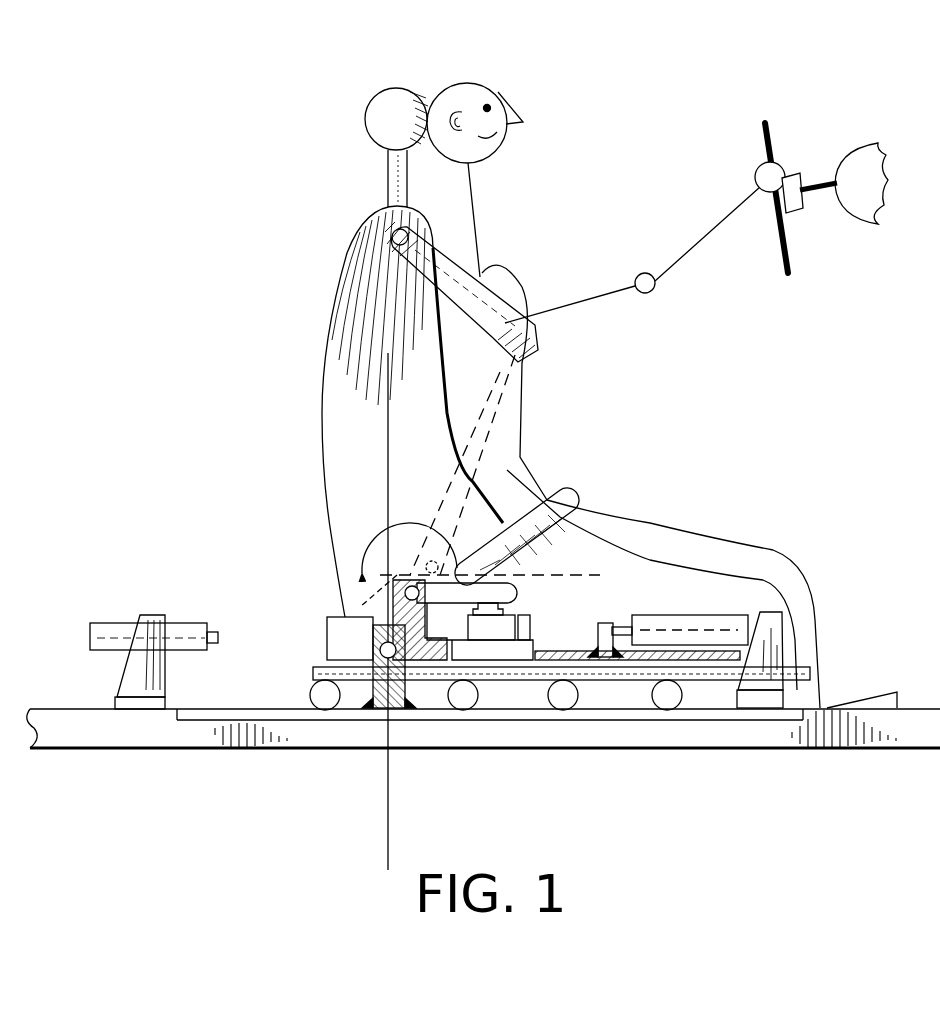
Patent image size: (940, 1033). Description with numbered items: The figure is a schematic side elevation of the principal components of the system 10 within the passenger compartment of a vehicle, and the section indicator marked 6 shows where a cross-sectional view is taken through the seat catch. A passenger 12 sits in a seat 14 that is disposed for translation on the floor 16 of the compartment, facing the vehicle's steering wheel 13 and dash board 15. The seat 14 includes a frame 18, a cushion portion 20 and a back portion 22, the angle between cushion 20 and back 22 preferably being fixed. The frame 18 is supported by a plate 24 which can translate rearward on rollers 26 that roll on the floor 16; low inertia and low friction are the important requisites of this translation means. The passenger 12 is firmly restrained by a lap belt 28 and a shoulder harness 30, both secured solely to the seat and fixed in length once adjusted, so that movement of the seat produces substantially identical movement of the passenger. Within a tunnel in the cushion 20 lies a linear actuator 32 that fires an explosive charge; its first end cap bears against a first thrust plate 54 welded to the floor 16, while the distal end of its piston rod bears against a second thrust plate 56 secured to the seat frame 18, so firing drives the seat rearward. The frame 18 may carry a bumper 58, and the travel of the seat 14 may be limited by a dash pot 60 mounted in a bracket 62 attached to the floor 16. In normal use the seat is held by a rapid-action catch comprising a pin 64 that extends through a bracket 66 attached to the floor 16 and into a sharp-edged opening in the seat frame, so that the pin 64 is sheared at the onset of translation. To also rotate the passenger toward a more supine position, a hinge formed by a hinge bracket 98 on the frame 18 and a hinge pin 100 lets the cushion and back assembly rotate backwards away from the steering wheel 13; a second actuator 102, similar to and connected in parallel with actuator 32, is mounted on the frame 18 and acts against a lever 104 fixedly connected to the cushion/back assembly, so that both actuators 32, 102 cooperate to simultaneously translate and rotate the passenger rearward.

The system 10 is at (756, 460).
The passenger 12 is at (500, 88).
The steering wheel 13 is at (770, 130).
The dash board 15 is at (872, 143).
The seat 14 is at (588, 622).
The floor 16 is at (847, 730).
The frame 18 is at (708, 660).
The cushion portion 20 is at (737, 602).
The back portion 22 is at (323, 473).
The plate 24 is at (625, 677).
The rollers 26 is at (465, 703).
The lap belt 28 is at (567, 500).
The shoulder harness 30 is at (447, 263).
The linear actuator 32 is at (687, 625).
The first thrust plate 54 is at (777, 630).
The second thrust plate 56 is at (605, 630).
The bumper 58 is at (327, 620).
The dash pot 60 is at (185, 622).
The bracket 62 is at (123, 668).
The pin 64 is at (380, 649).
The bracket 66 is at (378, 699).
The hinge bracket 98 is at (410, 578).
The hinge pin 100 is at (395, 582).
The second actuator 102 is at (512, 608).
The lever 104 is at (527, 497).
The section line 6- 6 is at (384, 388).